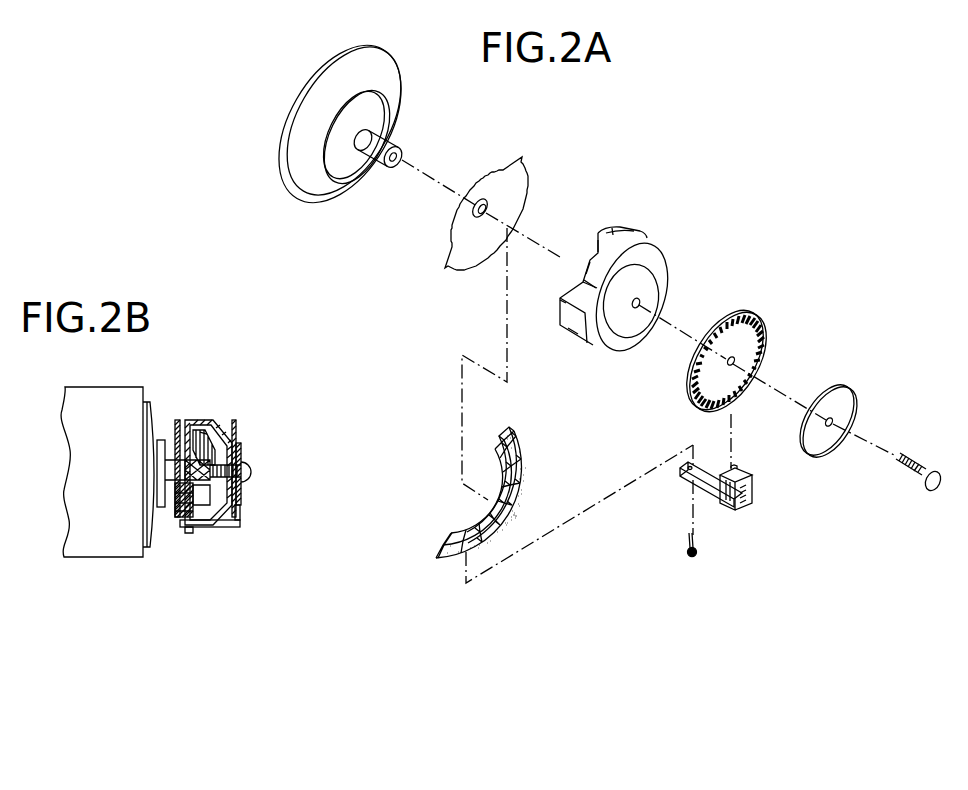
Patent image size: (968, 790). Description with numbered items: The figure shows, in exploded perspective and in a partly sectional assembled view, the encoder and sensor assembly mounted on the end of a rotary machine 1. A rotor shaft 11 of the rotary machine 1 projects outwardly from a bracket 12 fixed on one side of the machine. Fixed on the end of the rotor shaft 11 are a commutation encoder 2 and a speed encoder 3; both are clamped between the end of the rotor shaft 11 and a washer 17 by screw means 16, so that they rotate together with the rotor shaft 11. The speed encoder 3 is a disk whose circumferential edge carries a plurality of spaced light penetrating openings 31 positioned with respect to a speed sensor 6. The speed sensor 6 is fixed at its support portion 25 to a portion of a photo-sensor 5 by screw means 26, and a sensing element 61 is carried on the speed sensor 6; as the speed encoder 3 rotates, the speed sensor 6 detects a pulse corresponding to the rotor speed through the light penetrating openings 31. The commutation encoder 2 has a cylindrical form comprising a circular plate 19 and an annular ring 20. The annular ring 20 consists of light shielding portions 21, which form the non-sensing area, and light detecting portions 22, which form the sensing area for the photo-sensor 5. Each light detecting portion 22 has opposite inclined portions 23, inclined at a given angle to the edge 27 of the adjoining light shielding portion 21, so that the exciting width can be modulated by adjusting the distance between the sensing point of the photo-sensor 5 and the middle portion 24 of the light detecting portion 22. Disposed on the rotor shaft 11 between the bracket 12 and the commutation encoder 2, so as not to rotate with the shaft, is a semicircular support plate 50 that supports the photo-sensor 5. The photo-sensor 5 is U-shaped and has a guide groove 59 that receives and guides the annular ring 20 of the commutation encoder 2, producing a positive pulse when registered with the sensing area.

In FIG. 2A, the rotary machine 1 is at (312, 206).
In FIG. 2B, the rotary machine 1 is at (101, 490).
In FIG. 2A, the rotor shaft 11 is at (389, 140).
In FIG. 2B, the rotor shaft 11 is at (190, 440).
In FIG. 2A, the bracket 12 is at (362, 166).
In FIG. 2A, the semicircular support plate 50 is at (535, 172).
In FIG. 2B, the semicircular support plate 50 is at (175, 425).
In FIG. 2A, the commutation encoder 2 is at (619, 268).
In FIG. 2B, the commutation encoder 2 is at (205, 442).
In FIG. 2A, the circular plate 19 is at (650, 290).
In FIG. 2A, the annular ring 20 is at (630, 240).
In FIG. 2A, the light shielding portions 21 is at (620, 238).
In FIG. 2A, the light detecting portions 22 is at (586, 268).
In FIG. 2B, the light detecting portions 22 is at (203, 438).
In FIG. 2A, the inclined portions 23 is at (597, 242).
In FIG. 2A, the middle portion 24 is at (588, 272).
In FIG. 2A, the edge 27 is at (561, 301).
In FIG. 2A, the speed encoder 3 is at (751, 350).
In FIG. 2B, the speed encoder 3 is at (263, 442).
In FIG. 2A, the light penetrating openings 31 is at (767, 353).
In FIG. 2B, the light penetrating openings 31 is at (236, 425).
In FIG. 2A, the washer 17 is at (845, 407).
In FIG. 2B, the washer 17 is at (242, 445).
In FIG. 2A, the screw means 16 is at (933, 473).
In FIG. 2B, the screw means 16 is at (247, 473).
In FIG. 2A, the speed sensor 6 is at (735, 490).
In FIG. 2B, the speed sensor 6 is at (220, 551).
In FIG. 2A, the sensor block 61 is at (738, 468).
In FIG. 2A, the support portion 25 is at (703, 496).
In FIG. 2B, the support portion 25 is at (215, 529).
In FIG. 2A, the screw means 26 is at (687, 552).
In FIG. 2B, the screw means 26 is at (190, 536).
In FIG. 2A, the photo-sensor 5 is at (486, 492).
In FIG. 2B, the photo-sensor 5 is at (186, 534).
In FIG. 2A, the guide groove 59 is at (478, 558).